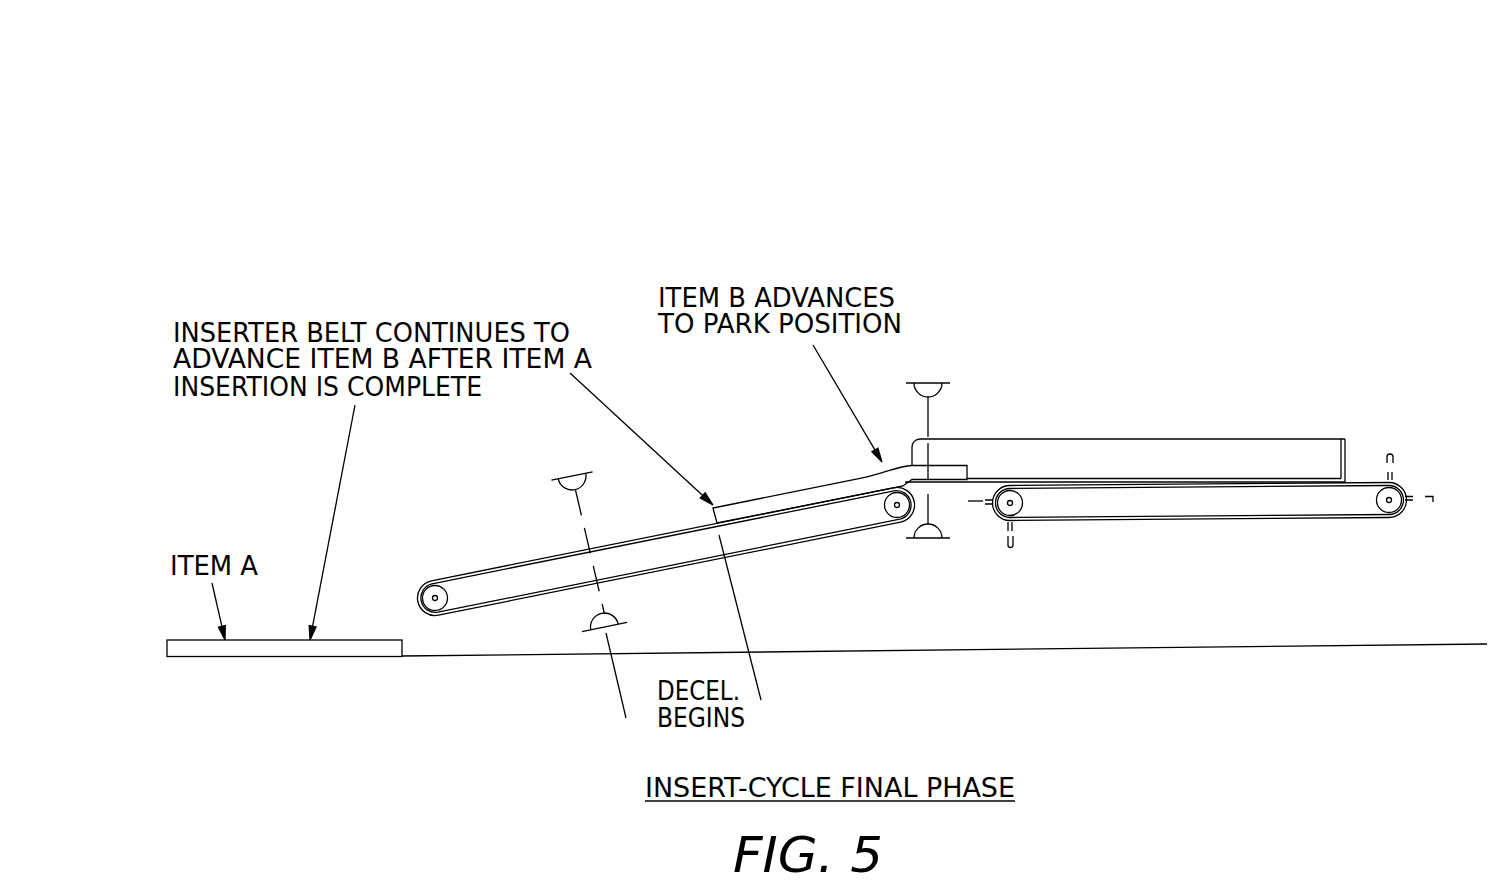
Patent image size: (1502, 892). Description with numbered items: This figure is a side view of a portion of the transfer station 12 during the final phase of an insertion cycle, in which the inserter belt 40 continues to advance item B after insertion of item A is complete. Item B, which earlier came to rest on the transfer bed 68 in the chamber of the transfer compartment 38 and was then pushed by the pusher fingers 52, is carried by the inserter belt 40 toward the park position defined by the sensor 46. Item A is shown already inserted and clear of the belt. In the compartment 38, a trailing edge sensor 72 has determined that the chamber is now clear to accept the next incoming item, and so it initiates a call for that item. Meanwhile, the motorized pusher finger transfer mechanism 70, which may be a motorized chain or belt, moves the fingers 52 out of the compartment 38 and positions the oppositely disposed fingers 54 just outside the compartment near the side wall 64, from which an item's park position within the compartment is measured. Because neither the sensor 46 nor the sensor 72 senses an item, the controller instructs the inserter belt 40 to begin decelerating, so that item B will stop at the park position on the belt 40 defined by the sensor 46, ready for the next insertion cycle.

The transfer station 12 is at (1318, 267).
The transfer compartment 38 is at (1066, 448).
The inserter belt 40 is at (778, 545).
The sensor 46 is at (566, 472).
The pusher fingers 52 is at (972, 501).
The pusher fingers 54 is at (1433, 502).
The side wall 64 is at (1345, 437).
The transfer bed 68 is at (1268, 477).
The motorized pusher finger transfer mechanism 70 is at (1190, 517).
The trailing edge sensor 72 is at (931, 362).